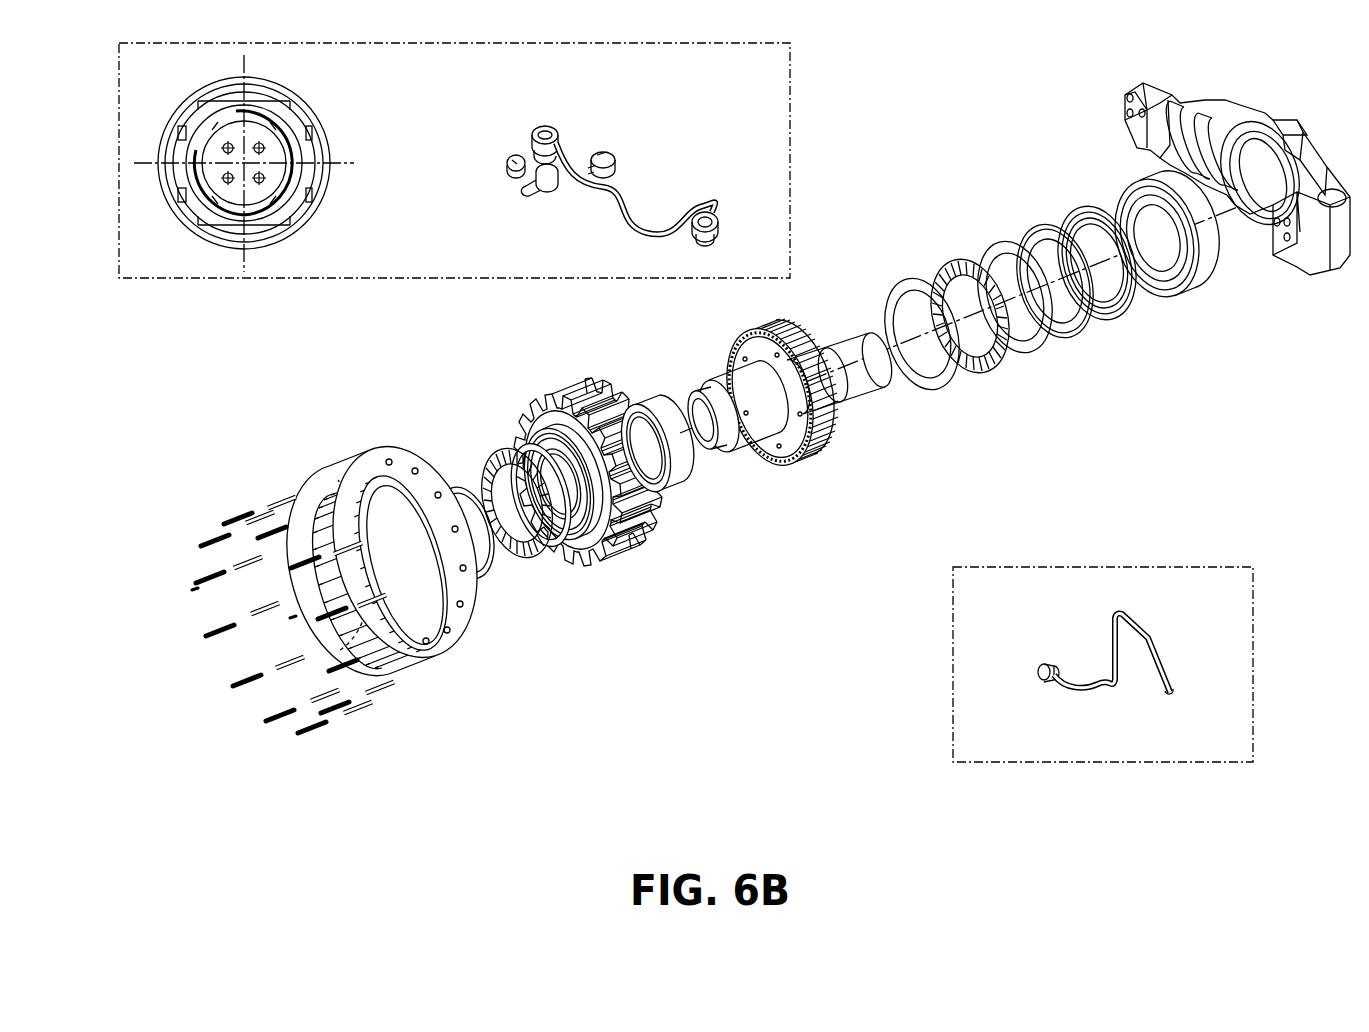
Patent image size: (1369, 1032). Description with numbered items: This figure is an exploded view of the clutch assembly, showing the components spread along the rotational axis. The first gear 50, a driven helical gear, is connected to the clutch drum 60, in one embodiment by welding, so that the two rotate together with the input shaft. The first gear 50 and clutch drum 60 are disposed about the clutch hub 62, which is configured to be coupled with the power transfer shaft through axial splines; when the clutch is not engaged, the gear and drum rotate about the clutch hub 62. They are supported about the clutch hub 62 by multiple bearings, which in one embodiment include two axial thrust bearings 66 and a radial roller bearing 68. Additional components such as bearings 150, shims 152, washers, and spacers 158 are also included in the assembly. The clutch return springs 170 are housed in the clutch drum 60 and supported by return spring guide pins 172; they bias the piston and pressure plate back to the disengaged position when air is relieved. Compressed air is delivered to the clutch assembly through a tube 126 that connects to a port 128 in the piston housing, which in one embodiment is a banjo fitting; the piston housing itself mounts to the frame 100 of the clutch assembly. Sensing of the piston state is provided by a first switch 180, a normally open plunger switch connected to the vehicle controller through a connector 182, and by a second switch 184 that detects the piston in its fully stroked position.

The first gear 50 is at (618, 499).
The clutch drum 60 is at (411, 581).
The clutch hub 62 is at (803, 403).
The axial thrust bearings 66 is at (428, 397).
The radial roller bearing 68 is at (693, 475).
The frame 100 is at (1138, 94).
The tube 126 is at (1189, 654).
The port 128 is at (972, 642).
The bearings 150 is at (1196, 262).
The shims 152 is at (1124, 325).
The spacers 158 is at (1167, 299).
The clutch return springs 170 is at (305, 662).
The return spring guide pins 172 is at (361, 635).
The first switch 180 is at (622, 150).
The connector 182 is at (504, 163).
The second switch 184 is at (515, 128).